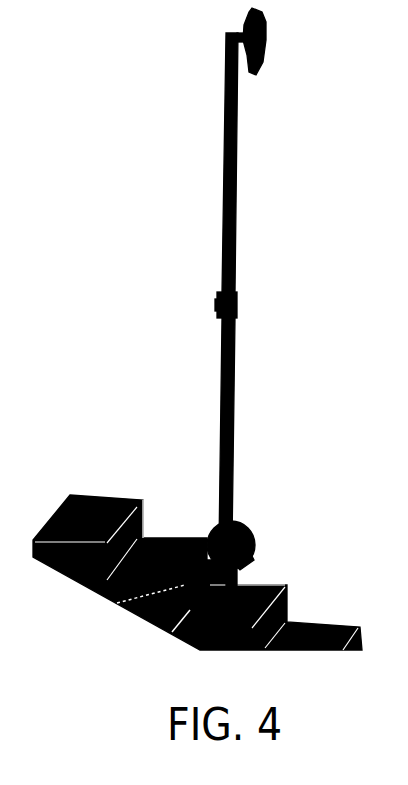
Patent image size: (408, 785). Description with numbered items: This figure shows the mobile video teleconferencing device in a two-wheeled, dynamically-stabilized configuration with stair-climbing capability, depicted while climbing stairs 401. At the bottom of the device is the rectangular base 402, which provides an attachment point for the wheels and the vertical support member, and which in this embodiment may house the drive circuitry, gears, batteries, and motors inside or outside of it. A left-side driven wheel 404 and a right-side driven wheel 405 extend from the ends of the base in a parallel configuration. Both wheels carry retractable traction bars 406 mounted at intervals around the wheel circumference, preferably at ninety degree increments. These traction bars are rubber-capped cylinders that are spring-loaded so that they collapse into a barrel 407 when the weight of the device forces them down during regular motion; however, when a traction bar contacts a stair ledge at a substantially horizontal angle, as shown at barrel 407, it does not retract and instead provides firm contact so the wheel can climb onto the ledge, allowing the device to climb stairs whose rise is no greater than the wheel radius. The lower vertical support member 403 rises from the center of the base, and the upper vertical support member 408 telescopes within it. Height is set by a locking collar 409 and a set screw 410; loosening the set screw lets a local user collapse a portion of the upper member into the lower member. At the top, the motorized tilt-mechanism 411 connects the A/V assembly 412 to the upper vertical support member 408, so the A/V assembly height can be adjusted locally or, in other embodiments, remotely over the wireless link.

The stairs 401 is at (88, 495).
The rectangular base 402 is at (234, 563).
The lower vertical support member 403 is at (232, 392).
The left-side driven wheel 404 is at (245, 527).
The right-side driven wheel 405 is at (237, 572).
The retractable traction bars 406 is at (173, 630).
The barrel 407 is at (117, 603).
The upper vertical support member 408 is at (237, 171).
The locking collar 409 is at (236, 303).
The set screw 410 is at (218, 305).
The motorized tilt-mechanism 411 is at (240, 37).
The A/V assembly 412 is at (263, 43).